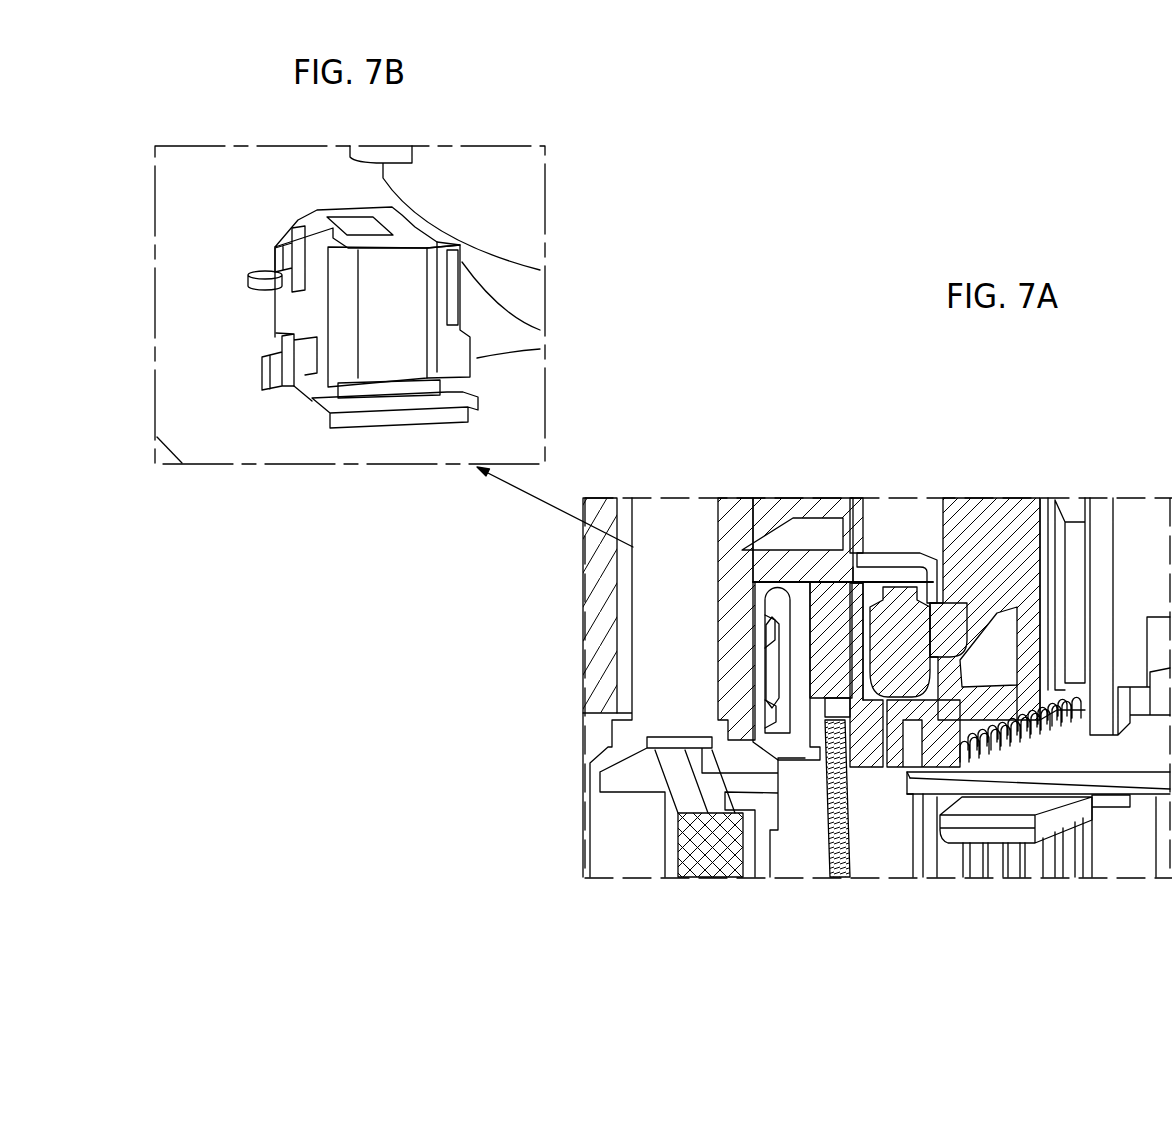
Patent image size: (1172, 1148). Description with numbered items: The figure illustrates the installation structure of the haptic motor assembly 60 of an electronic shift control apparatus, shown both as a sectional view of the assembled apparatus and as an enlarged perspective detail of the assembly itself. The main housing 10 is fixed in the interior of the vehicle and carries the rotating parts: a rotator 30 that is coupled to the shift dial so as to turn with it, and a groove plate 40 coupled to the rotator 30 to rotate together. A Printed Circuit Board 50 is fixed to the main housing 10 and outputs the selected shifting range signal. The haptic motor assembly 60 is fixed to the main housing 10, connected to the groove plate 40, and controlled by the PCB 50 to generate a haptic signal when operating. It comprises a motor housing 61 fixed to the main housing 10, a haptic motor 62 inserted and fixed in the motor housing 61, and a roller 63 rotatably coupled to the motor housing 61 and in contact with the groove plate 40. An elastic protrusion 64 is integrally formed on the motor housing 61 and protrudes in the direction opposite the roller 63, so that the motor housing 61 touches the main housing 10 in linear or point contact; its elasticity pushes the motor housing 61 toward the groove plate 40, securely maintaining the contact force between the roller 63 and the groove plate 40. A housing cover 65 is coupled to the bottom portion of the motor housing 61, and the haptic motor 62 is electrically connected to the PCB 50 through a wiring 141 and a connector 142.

In FIG. 7A, the main housing 10 is at (727, 568).
In FIG. 7B, the rotator 30 is at (533, 203).
In FIG. 7A, the rotator 30 is at (957, 580).
In FIG. 7B, the groove plate 40 is at (533, 302).
In FIG. 7A, the groove plate 40 is at (953, 613).
In FIG. 7B, the Printed Circuit Board (PCB) 50 is at (182, 408).
In FIG. 7A, the Printed Circuit Board (PCB) 50 is at (618, 782).
In FIG. 7B, the haptic motor assembly 60 is at (297, 402).
In FIG. 7A, the haptic motor assembly 60 is at (755, 580).
In FIG. 7B, the motor housing 61 is at (400, 340).
In FIG. 7A, the motor housing 61 is at (800, 597).
In FIG. 7B, the haptic motor 62 is at (360, 237).
In FIG. 7A, the haptic motor 62 is at (832, 613).
In FIG. 7A, the roller 63 is at (907, 623).
In FIG. 7B, the elastic protrusion 64 is at (297, 292).
In FIG. 7A, the elastic protrusion 64 is at (763, 725).
In FIG. 7B, the housing cover 65 is at (382, 418).
In FIG. 7A, the housing cover 65 is at (938, 742).
In FIG. 7A, the wiring 141 is at (833, 860).
In FIG. 7A, the connector 142 is at (712, 857).